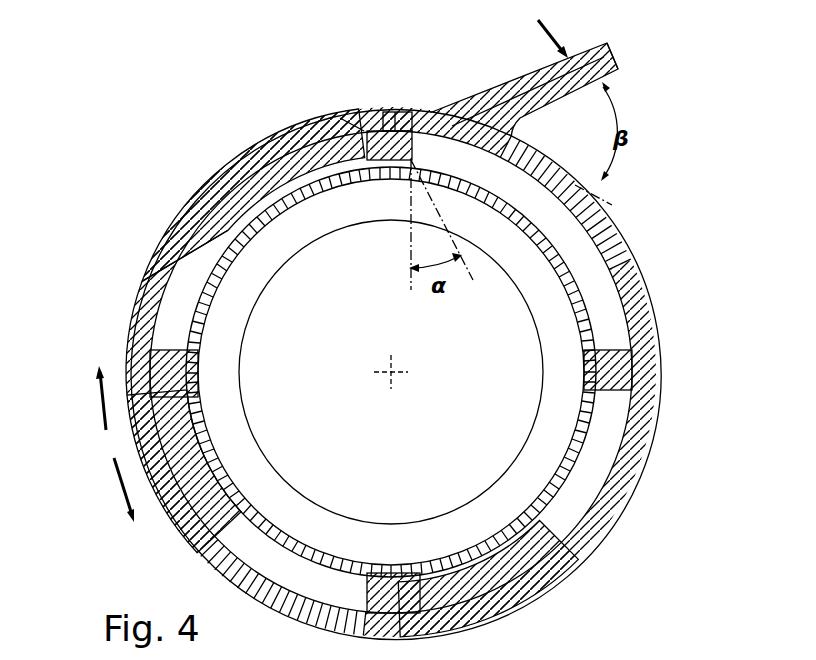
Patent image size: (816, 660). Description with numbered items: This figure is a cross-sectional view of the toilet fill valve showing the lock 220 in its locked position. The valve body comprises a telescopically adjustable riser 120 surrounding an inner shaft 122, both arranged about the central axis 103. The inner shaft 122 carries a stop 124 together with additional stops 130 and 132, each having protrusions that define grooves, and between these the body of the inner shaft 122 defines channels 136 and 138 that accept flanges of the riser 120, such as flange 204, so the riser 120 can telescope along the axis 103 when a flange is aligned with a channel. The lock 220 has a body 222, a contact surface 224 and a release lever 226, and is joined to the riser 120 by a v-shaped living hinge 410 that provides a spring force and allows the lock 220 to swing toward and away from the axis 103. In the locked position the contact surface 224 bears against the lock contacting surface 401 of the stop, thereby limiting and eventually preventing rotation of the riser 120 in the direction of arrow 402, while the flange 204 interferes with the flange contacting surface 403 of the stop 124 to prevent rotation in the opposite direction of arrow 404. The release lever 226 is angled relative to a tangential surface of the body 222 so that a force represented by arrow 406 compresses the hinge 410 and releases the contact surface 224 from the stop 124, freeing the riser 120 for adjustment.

The axis 103 is at (385, 366).
The riser 120 is at (172, 242).
The inner shaft 122 is at (142, 282).
The stop 124 is at (388, 118).
The stop 130 is at (627, 357).
The stop 132 is at (162, 366).
The channel 136 is at (229, 227).
The channel 138 is at (517, 183).
The flange 204 is at (292, 170).
The lock 220 is at (508, 58).
The body of lock 222 is at (600, 226).
The contact surface 224 is at (393, 163).
The release lever 226 is at (612, 52).
The lock contacting surface 401 is at (400, 160).
The arrow 402 is at (118, 477).
The flange contacting surface 403 is at (362, 148).
The arrow 404 is at (100, 408).
The force arrow 406 is at (558, 28).
The hinge 410 is at (628, 263).